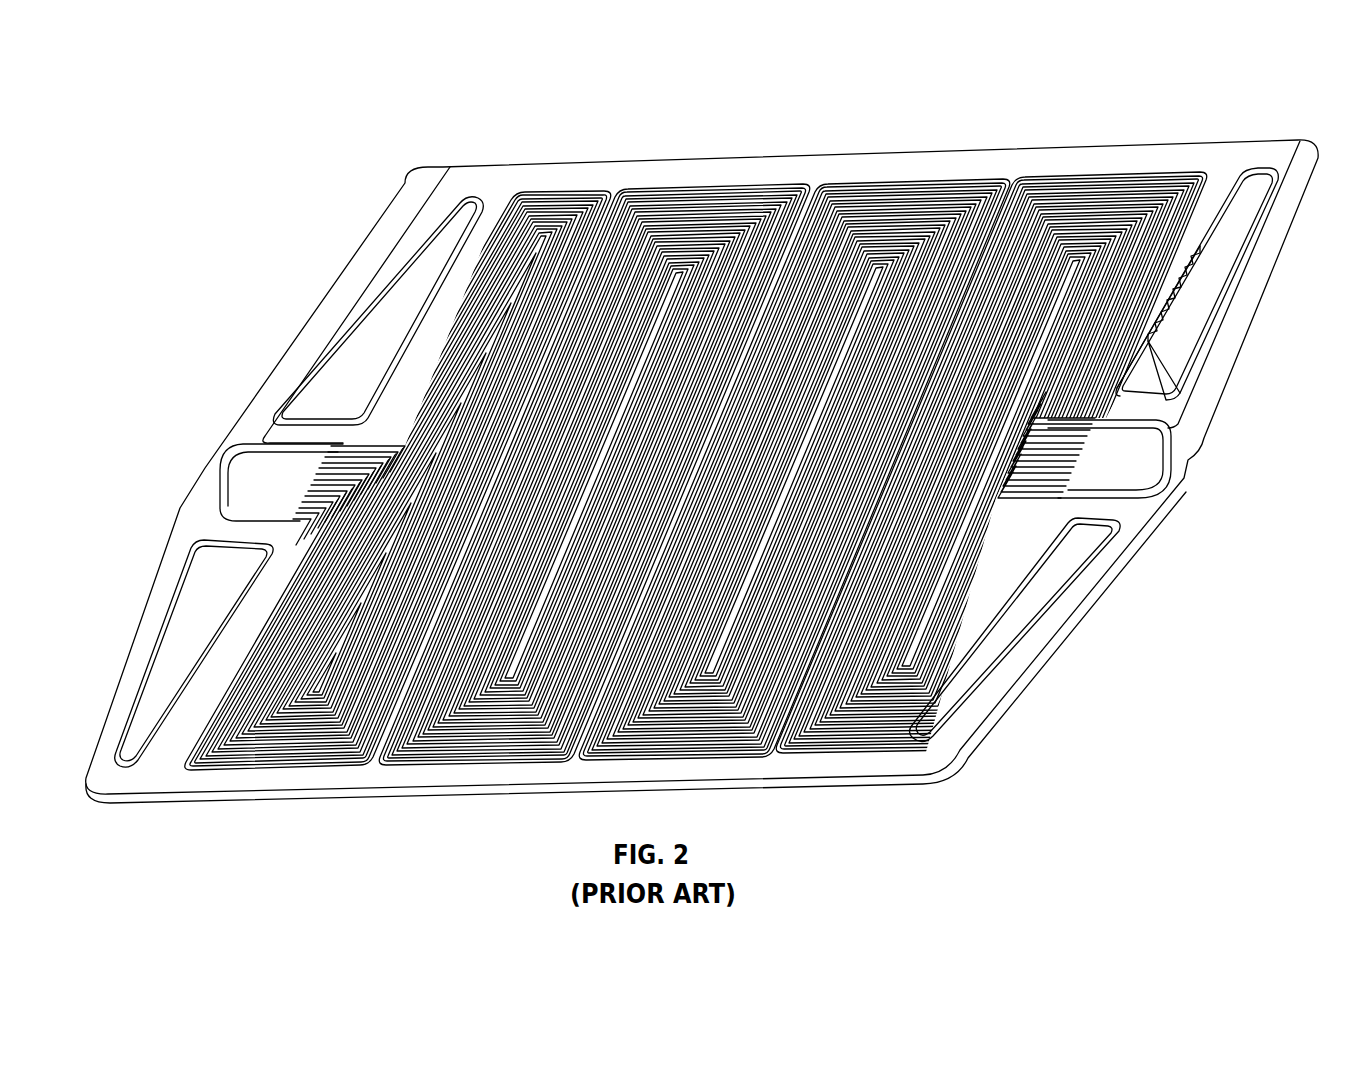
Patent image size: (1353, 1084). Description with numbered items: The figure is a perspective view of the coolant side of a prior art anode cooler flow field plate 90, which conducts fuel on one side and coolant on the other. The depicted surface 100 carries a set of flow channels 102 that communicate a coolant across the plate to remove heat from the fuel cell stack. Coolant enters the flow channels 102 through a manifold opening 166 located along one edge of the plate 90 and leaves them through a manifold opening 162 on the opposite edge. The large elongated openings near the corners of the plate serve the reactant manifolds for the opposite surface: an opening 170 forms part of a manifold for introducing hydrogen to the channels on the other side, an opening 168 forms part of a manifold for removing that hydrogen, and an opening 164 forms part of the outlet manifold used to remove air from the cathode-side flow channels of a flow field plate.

The anode cooler flow field plate 90 is at (940, 770).
The surface 100 is at (800, 157).
The flow channels 102 is at (1010, 190).
The manifold opening 162 is at (1117, 466).
The opening 164 is at (977, 643).
The manifold opening 166 is at (262, 487).
The opening 168 is at (1192, 328).
The opening 170 is at (133, 722).